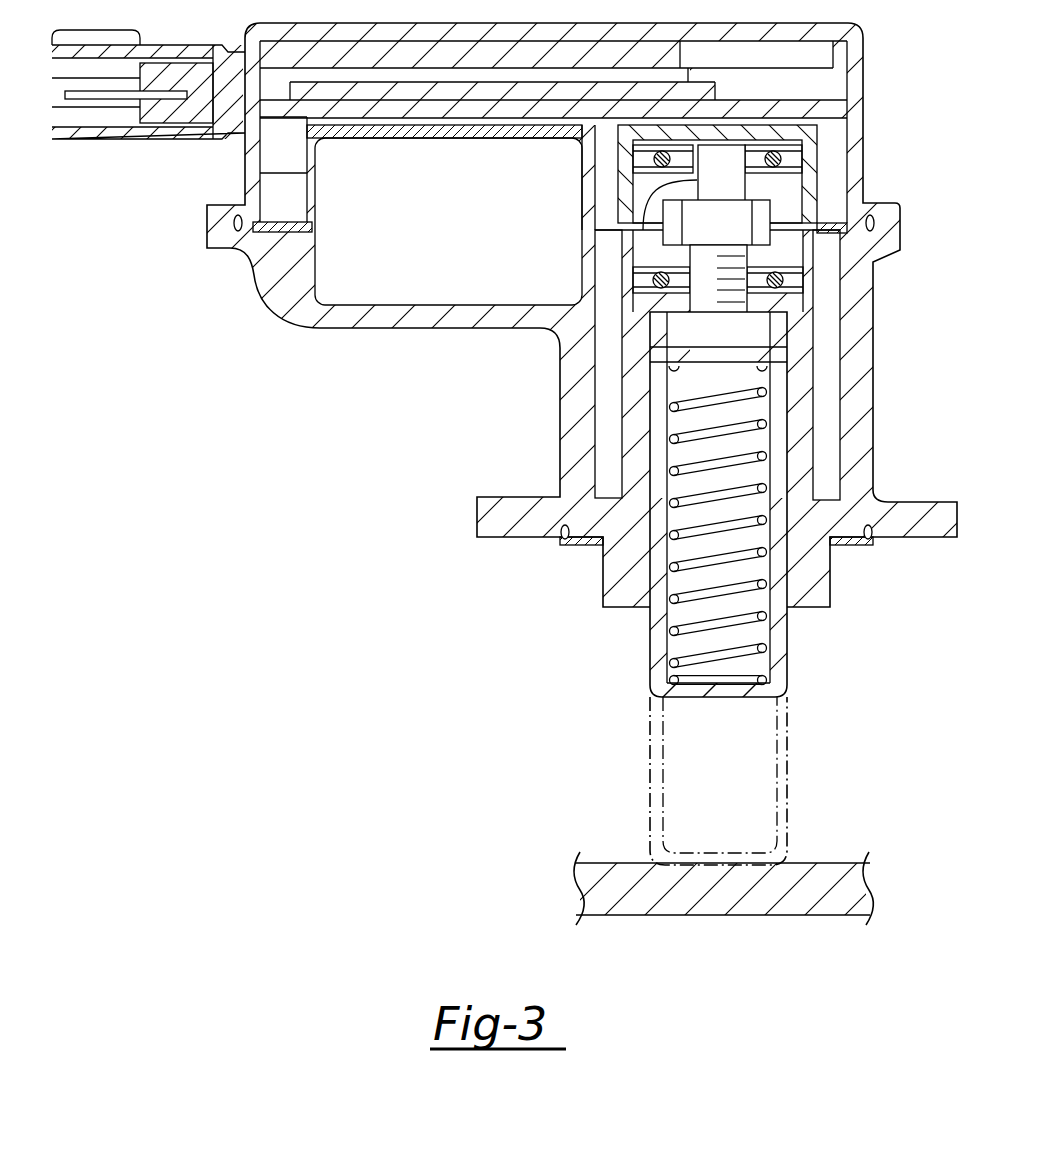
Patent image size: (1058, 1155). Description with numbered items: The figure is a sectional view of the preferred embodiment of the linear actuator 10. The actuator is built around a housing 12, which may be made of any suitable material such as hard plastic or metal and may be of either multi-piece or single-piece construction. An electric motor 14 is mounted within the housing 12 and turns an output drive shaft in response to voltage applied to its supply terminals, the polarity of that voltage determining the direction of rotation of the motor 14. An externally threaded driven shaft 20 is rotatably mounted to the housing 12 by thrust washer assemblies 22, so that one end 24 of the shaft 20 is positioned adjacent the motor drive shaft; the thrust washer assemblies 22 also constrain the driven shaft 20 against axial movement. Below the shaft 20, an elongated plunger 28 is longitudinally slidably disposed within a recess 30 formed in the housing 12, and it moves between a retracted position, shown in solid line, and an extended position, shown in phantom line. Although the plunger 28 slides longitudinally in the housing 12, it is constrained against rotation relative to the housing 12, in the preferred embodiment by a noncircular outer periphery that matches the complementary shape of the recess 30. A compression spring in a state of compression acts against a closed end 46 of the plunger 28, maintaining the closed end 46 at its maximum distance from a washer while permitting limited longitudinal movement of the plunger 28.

The linear actuator 10 is at (298, 491).
The housing 12 is at (862, 392).
The electric motor 14 is at (456, 233).
The externally threaded driven shaft 20 is at (737, 597).
The thrust washer assemblies 22 is at (800, 157).
The end of the shaft 24 is at (730, 190).
The elongated plunger 28 is at (790, 636).
The recess 30 is at (653, 567).
The closed end of the plunger 46 is at (717, 697).